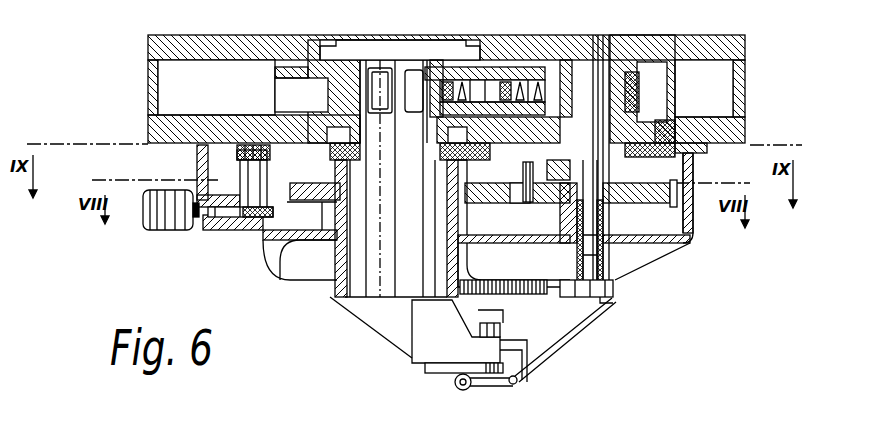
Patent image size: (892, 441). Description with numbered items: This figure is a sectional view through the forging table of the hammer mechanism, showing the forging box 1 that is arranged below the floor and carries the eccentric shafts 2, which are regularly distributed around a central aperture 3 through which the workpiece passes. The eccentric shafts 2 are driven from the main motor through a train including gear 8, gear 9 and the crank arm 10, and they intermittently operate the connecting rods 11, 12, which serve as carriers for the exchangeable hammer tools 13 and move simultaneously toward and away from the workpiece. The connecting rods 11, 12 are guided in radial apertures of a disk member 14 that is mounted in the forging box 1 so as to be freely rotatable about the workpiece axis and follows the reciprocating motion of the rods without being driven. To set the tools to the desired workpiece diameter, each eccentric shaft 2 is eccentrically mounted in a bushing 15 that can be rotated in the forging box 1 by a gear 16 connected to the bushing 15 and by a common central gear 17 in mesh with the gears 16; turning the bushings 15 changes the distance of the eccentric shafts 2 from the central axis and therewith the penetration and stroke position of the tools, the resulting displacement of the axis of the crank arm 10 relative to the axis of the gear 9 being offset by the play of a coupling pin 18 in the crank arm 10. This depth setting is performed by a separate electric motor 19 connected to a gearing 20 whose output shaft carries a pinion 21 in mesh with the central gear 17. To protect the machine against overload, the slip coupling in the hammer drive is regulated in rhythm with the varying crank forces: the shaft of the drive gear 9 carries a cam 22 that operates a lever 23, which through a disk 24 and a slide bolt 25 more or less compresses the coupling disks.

The forging box 1 is at (148, 83).
The eccentric shafts 2 is at (586, 85).
The central aperture 3 is at (398, 280).
The gear 8 is at (302, 200).
The gear 9 is at (665, 185).
The crank arm 10 is at (558, 180).
The connecting rod 11 is at (632, 110).
The connecting rod 12 is at (428, 115).
The hammer tools 13 is at (415, 78).
The disk member 14 is at (443, 135).
The bushings 15 is at (672, 133).
The gears 16 is at (663, 170).
The central gear 17 is at (272, 168).
The coupling pin 18 is at (525, 206).
The electric motor 19 is at (168, 228).
The gearing 20 is at (235, 227).
The pinion 21 is at (237, 147).
The cam 22 is at (612, 288).
The lever 23 is at (548, 348).
The disk 24 is at (442, 372).
The slide bolt 25 is at (500, 333).